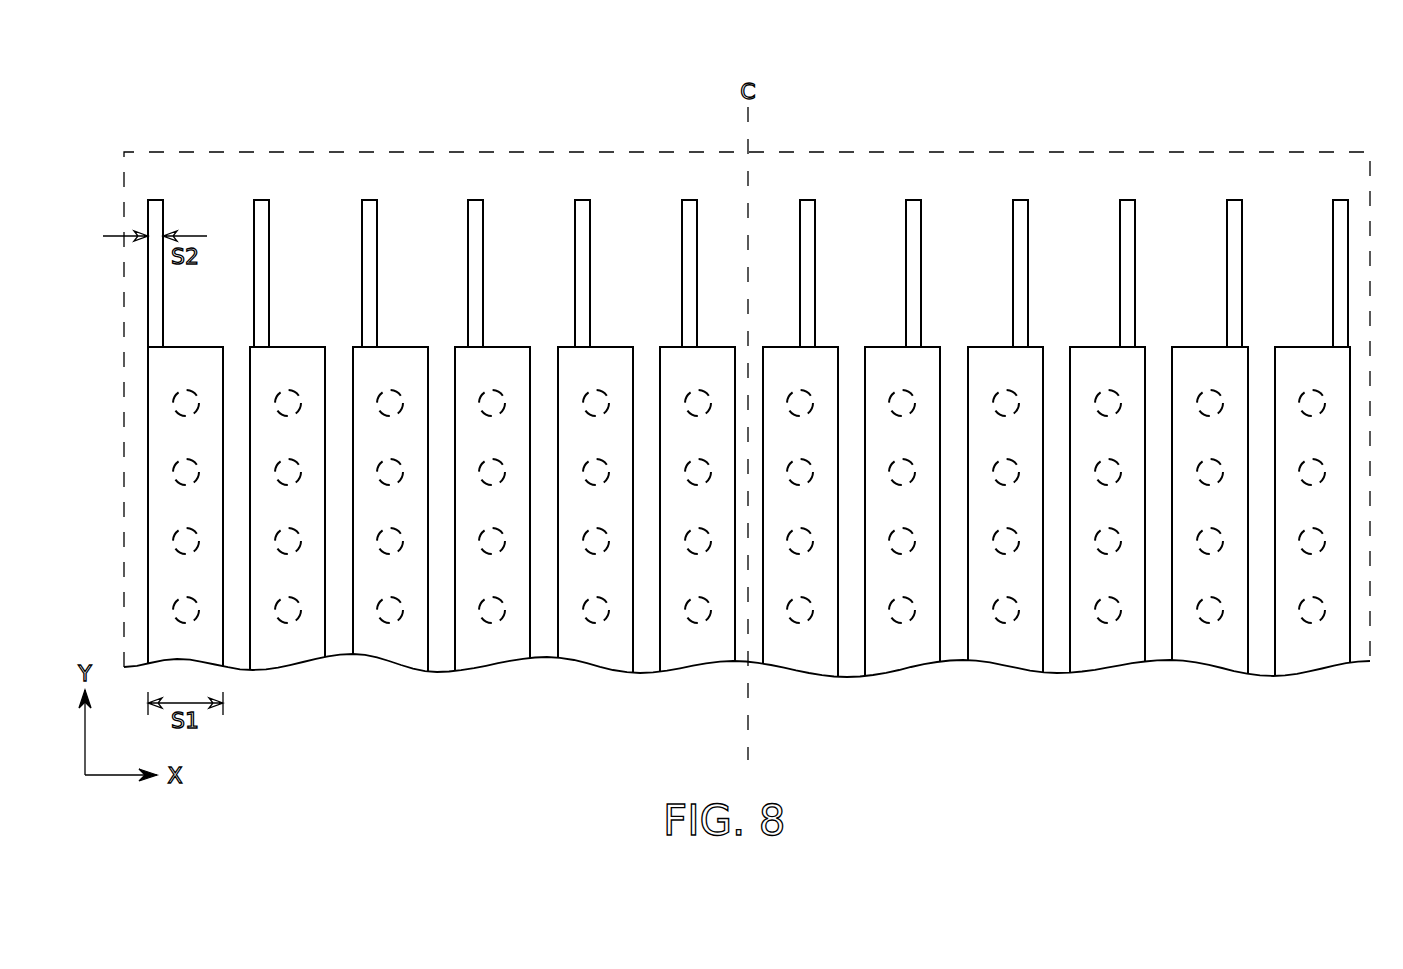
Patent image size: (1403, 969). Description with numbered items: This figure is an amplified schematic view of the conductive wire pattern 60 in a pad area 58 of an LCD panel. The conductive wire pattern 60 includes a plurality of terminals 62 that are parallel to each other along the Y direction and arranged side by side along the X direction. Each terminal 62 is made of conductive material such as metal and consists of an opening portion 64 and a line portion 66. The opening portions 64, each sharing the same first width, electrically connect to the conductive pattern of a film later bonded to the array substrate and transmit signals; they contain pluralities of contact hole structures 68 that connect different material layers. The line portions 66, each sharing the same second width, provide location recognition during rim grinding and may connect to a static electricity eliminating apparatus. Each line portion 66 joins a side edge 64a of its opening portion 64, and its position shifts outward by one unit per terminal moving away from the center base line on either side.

The pad area 58 is at (1332, 152).
The conductive wire pattern 60 is at (1185, 172).
The terminal 62 is at (129, 433).
The opening portion 64 is at (148, 447).
The side edge of the opening portion 64a is at (1298, 347).
The line portion 66 is at (148, 300).
The contact hole structure 68 is at (142, 538).